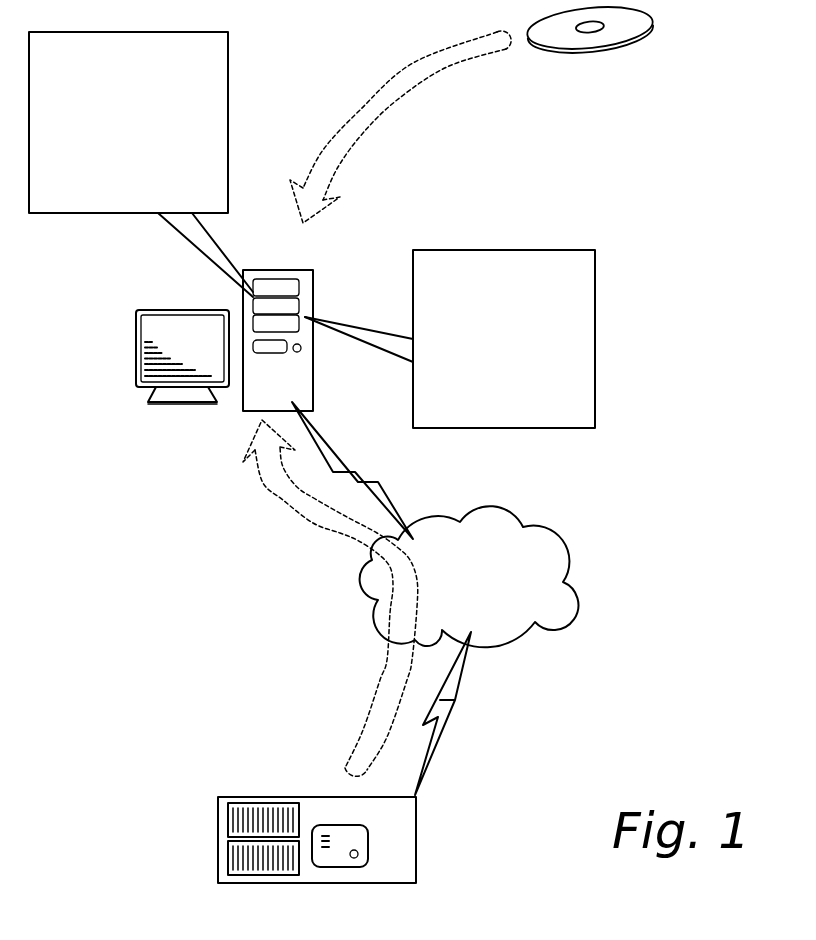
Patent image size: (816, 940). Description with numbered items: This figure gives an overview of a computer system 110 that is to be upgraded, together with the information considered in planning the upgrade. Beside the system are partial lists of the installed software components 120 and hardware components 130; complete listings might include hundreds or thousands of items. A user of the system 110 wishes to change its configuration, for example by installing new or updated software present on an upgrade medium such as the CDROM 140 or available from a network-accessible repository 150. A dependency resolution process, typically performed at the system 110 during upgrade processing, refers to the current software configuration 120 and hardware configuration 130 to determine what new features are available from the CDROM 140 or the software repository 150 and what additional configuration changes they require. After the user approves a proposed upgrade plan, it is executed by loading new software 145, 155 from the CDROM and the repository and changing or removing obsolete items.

The computer system 110 is at (129, 426).
The list of software components 120 is at (83, 213).
The list of hardware components 130 is at (595, 385).
The CDROM 140 is at (638, 40).
The loading of new software from CDROM 145 is at (413, 63).
The network-accessible repository 150 is at (404, 883).
The loading of new software from repository 155 is at (318, 535).